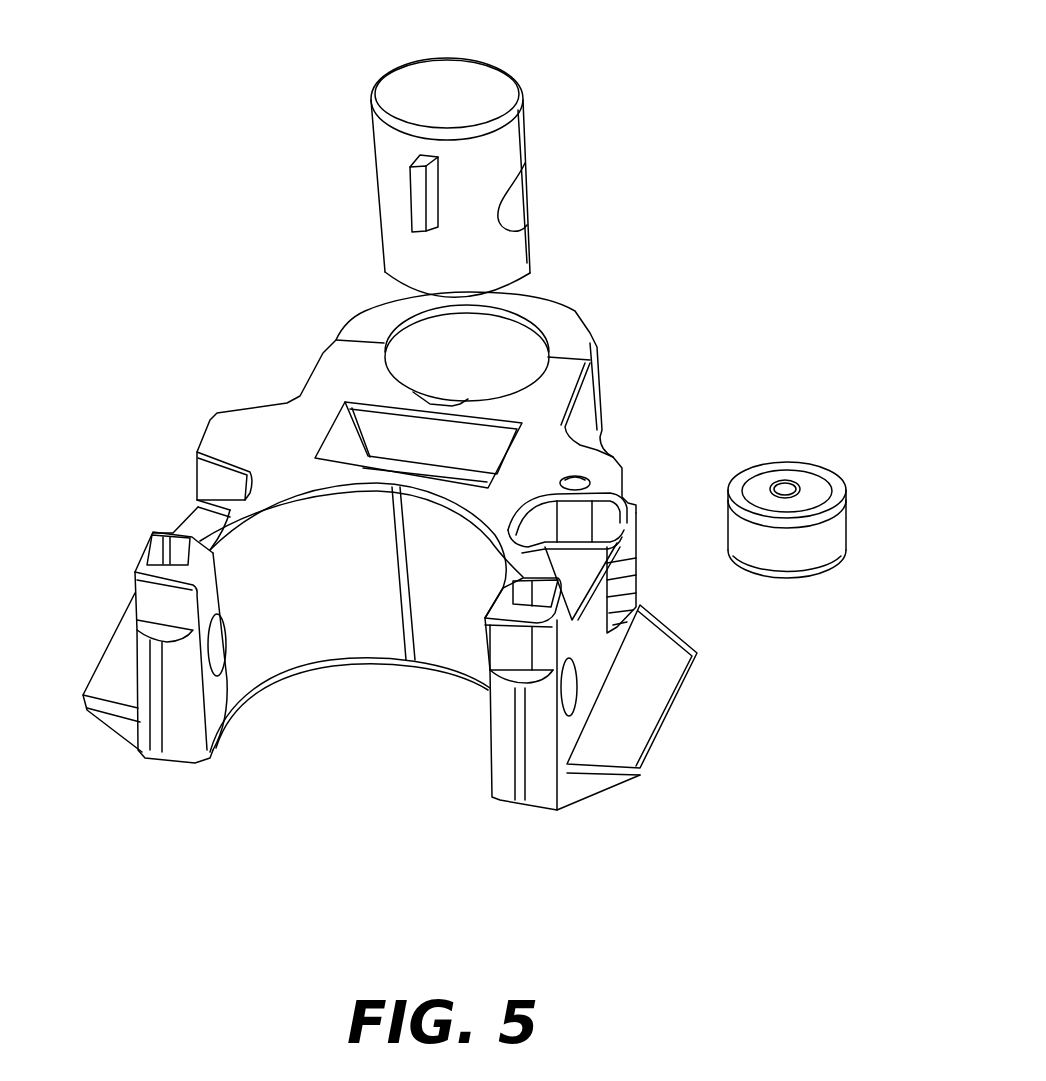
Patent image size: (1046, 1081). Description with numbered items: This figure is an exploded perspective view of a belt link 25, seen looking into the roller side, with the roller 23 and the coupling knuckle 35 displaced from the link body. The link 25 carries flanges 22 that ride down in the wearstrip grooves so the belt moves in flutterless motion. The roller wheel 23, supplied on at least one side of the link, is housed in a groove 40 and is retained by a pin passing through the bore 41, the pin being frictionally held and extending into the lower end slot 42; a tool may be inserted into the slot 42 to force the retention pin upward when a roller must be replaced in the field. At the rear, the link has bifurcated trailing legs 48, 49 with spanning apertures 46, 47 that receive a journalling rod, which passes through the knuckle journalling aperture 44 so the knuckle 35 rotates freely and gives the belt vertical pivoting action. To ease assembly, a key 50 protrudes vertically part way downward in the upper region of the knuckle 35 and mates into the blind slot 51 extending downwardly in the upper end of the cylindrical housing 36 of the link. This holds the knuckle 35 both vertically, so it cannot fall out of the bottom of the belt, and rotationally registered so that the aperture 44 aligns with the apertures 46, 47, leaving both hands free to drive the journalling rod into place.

The flange 22 is at (617, 747).
The roller 23 is at (797, 548).
The link 25 is at (302, 358).
The knuckle 35 is at (458, 99).
The cylindrical housing 36 is at (507, 337).
The groove 40 is at (625, 557).
The bore 41 is at (595, 437).
The lower end slot 42 is at (640, 606).
The knuckle journalling aperture 44 is at (513, 198).
The spanning aperture 46 is at (219, 615).
The spanning aperture 47 is at (572, 688).
The trailing leg 48 is at (190, 742).
The trailing leg 49 is at (503, 748).
The key 50 is at (410, 198).
The blind slot 51 is at (452, 401).